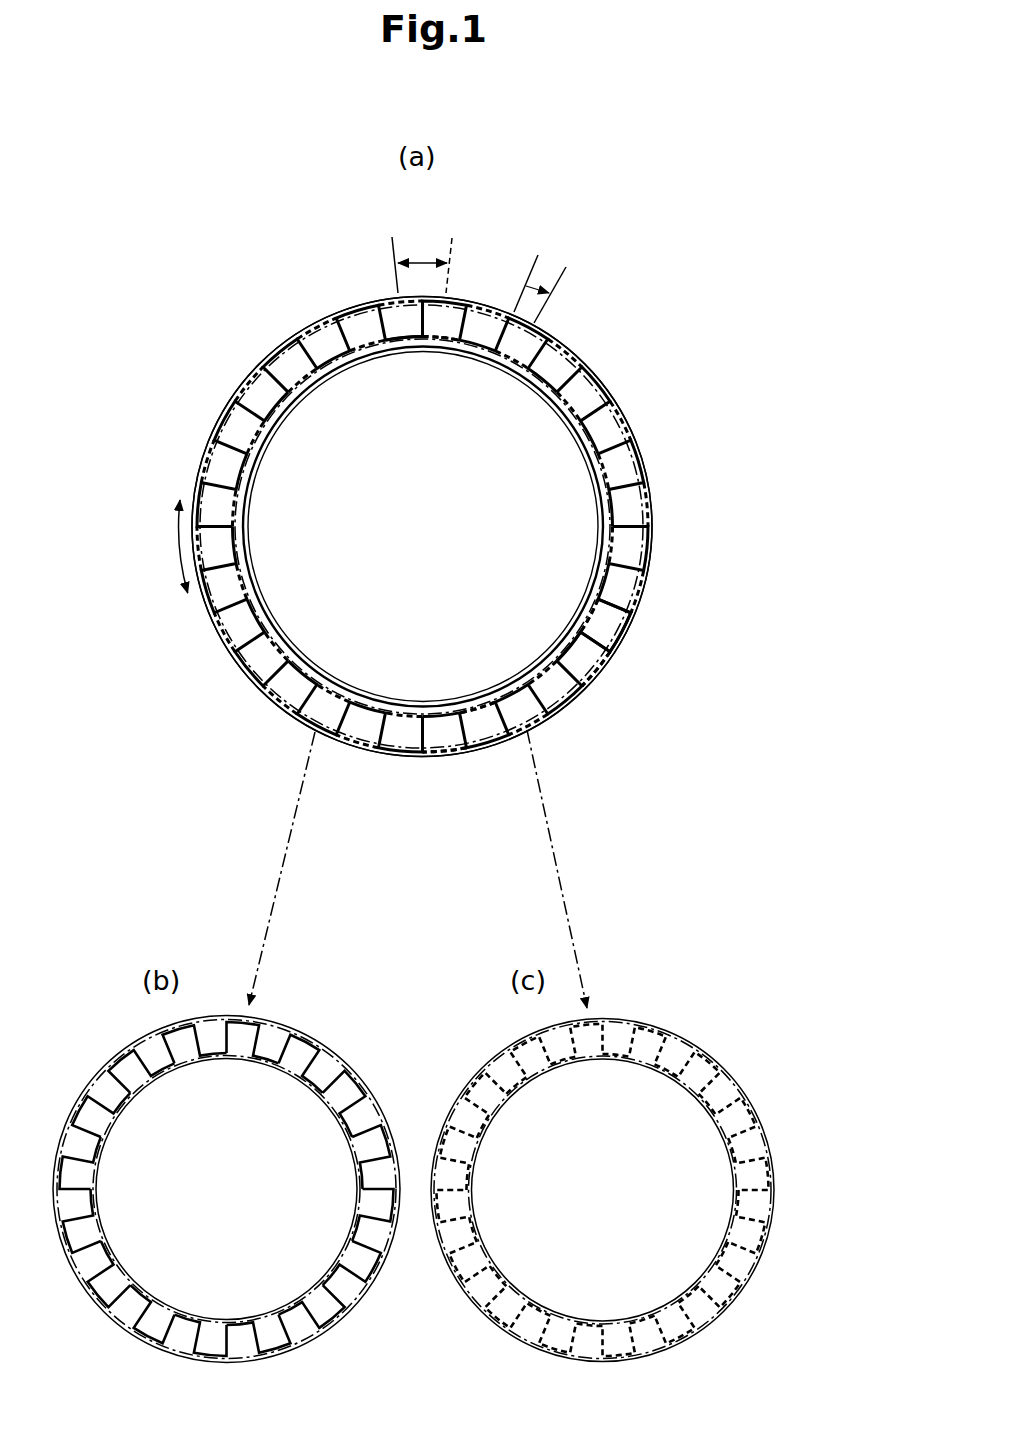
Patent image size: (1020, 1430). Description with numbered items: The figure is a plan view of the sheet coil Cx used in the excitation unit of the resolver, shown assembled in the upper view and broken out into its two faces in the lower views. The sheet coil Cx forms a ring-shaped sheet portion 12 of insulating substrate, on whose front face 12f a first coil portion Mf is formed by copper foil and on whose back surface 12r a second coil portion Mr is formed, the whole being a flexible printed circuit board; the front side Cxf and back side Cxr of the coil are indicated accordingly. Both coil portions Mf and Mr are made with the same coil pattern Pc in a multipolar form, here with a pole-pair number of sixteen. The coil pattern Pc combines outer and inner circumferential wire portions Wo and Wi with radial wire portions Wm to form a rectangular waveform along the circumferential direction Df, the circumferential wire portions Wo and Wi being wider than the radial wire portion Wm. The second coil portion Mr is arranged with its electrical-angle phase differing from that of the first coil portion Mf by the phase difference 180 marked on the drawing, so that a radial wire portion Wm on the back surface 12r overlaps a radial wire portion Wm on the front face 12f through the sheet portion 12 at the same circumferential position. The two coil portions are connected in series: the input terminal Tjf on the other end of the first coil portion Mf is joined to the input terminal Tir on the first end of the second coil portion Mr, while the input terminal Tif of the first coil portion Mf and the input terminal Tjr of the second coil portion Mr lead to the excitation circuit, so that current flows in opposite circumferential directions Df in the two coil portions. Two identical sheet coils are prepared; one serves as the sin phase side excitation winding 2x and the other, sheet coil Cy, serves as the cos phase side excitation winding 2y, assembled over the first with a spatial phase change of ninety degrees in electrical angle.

The sin phase side excitation winding 2x is at (279, 343).
The cos phase side excitation winding 2y is at (422, 527).
The sheet portion 12 is at (277, 422).
The front face 12f is at (603, 562).
The back surface 12r is at (263, 620).
The sheet coil Cx is at (538, 255).
The sheet coil Cy is at (567, 267).
The front face side of sheet coil Cx Cxf is at (582, 663).
The back face side of sheet coil Cx Cxr is at (505, 652).
The first coil portion Mf is at (645, 455).
The second coil portion Mr is at (644, 594).
The coil pattern Pc is at (656, 509).
The circumferential direction Df is at (179, 555).
The input terminal Tif is at (414, 343).
The input terminal Tjf is at (390, 344).
The input terminal Tir is at (429, 343).
The input terminal Tjr is at (456, 345).
The circumferential wire portion Wi is at (364, 707).
The radial wire portion Wm is at (388, 657).
The circumferential wire portion Wo is at (487, 747).
The 180 degree electrical angle 180 is at (424, 254).